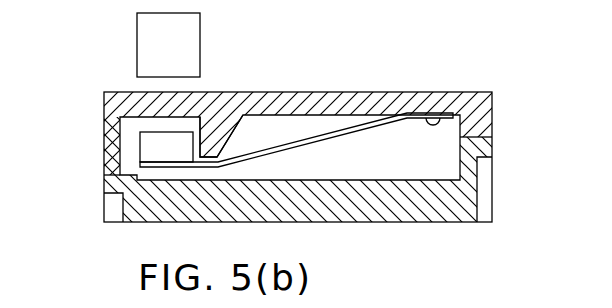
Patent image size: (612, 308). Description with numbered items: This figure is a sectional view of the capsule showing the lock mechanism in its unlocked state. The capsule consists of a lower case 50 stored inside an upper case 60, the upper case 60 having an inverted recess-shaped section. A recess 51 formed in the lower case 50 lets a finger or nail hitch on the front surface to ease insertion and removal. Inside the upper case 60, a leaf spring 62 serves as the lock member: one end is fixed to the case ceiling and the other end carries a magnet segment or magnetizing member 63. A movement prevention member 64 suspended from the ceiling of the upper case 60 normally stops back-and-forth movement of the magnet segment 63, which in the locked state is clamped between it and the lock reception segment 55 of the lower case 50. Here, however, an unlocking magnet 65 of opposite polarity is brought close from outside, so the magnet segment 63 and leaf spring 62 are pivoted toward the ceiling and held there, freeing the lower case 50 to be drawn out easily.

The lower case 50 is at (440, 213).
The recess 51 is at (488, 197).
The lock reception segment 55 is at (127, 176).
The upper case 60 is at (389, 73).
The leaf spring 62 is at (369, 128).
The magnet segment or magnetizing member 63 is at (140, 138).
The movement prevention member 64 is at (222, 133).
The unlocking magnet 65 is at (201, 30).